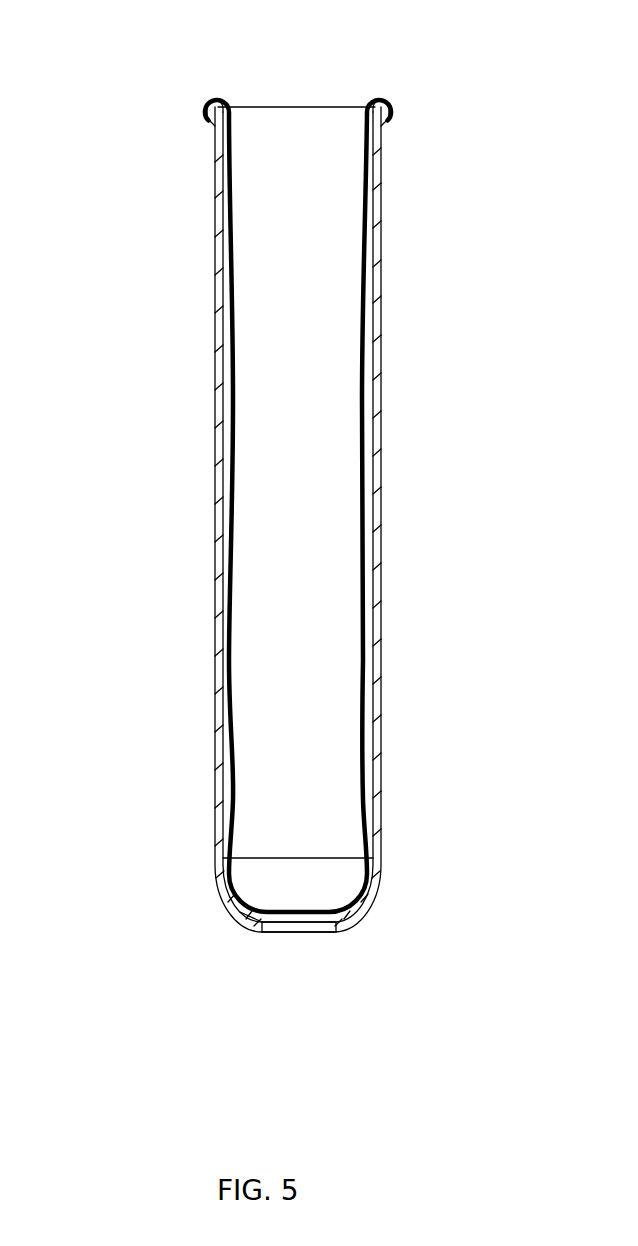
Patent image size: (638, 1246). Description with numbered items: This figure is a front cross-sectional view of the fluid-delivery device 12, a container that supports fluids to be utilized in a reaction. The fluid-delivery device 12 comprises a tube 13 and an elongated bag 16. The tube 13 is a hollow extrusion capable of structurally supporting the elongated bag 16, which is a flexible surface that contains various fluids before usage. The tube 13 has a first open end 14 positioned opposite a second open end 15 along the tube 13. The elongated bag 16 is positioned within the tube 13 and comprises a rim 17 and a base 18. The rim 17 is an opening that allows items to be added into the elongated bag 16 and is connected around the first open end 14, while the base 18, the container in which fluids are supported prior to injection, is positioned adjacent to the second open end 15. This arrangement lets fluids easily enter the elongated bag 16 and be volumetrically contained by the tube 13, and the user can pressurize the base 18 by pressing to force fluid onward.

The fluid-delivery device 12 is at (148, 108).
The tube 13 is at (377, 437).
The first open end 14 is at (300, 84).
The second open end 15 is at (308, 928).
The elongated bag 16 is at (367, 535).
The rim 17 is at (221, 97).
The base 18 is at (255, 925).